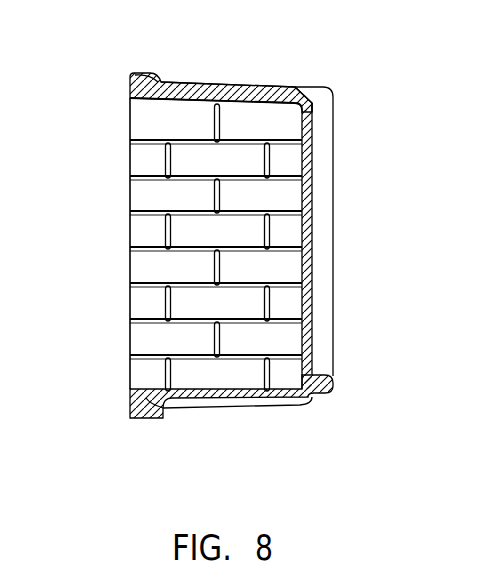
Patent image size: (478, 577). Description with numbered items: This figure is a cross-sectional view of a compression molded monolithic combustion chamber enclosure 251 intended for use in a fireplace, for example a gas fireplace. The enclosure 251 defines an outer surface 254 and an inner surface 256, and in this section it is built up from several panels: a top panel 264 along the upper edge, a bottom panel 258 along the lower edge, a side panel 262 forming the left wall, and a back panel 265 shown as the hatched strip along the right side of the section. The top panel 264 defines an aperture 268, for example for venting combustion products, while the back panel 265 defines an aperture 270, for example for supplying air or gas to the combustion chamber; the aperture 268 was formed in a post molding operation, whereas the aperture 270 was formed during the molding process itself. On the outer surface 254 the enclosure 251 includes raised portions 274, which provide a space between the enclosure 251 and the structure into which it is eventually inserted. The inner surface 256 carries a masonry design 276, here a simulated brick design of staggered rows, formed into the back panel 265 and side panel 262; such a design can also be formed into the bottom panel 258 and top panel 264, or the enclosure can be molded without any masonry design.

The combustion chamber enclosure 251 is at (340, 72).
The outer surface 254 is at (166, 76).
The inner surface 256 is at (157, 98).
The bottom panel 258 is at (226, 393).
The side panel 262 is at (128, 230).
The top panel 264 is at (187, 88).
The back panel 265 is at (313, 236).
The aperture 268 is at (247, 93).
The aperture 270 is at (311, 343).
The raised portions 274 is at (326, 160).
The masonry design 276 is at (167, 298).